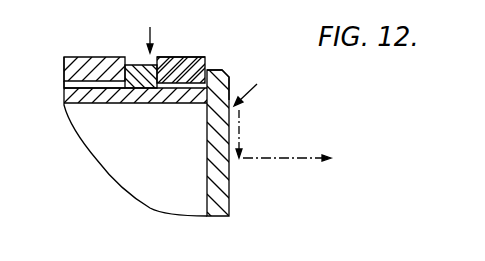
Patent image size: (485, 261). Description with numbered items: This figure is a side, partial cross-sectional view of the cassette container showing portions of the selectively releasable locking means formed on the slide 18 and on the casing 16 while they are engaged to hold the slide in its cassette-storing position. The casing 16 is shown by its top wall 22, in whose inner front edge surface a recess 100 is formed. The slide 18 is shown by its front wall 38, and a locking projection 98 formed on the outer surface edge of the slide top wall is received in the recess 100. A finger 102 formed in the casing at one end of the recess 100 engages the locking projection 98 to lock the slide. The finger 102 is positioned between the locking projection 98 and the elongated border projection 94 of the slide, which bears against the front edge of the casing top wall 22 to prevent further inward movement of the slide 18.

The top wall 22 is at (85, 56).
The recess 100 is at (128, 64).
The casing 16 is at (159, 34).
The locking projection 98 is at (163, 68).
The finger 102 is at (193, 56).
The border projection 94 is at (218, 71).
The slide 18 is at (282, 122).
The front wall 38 is at (229, 186).